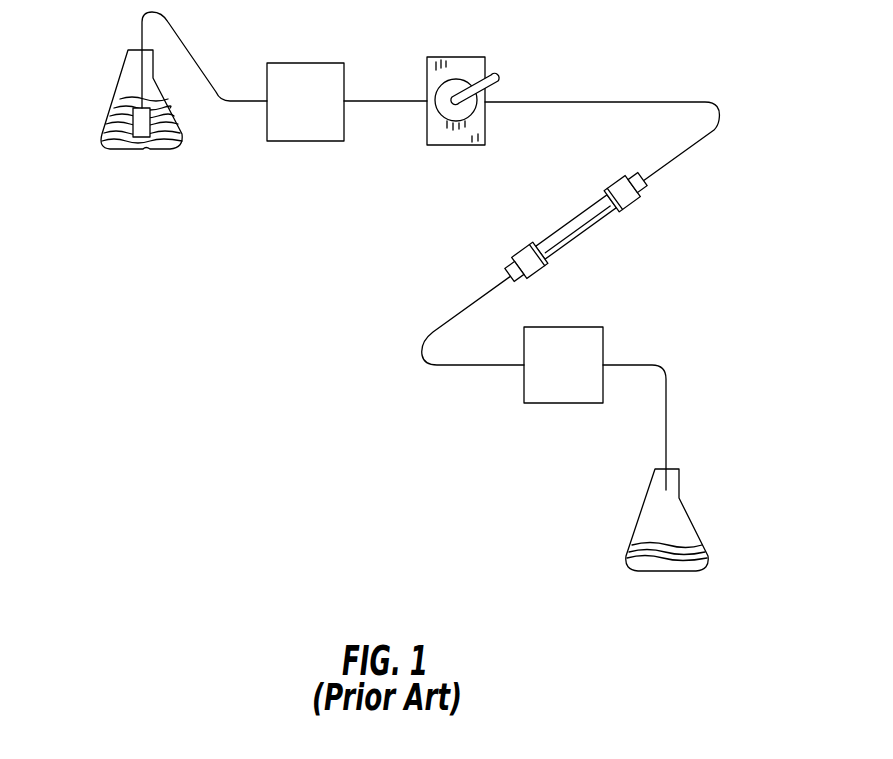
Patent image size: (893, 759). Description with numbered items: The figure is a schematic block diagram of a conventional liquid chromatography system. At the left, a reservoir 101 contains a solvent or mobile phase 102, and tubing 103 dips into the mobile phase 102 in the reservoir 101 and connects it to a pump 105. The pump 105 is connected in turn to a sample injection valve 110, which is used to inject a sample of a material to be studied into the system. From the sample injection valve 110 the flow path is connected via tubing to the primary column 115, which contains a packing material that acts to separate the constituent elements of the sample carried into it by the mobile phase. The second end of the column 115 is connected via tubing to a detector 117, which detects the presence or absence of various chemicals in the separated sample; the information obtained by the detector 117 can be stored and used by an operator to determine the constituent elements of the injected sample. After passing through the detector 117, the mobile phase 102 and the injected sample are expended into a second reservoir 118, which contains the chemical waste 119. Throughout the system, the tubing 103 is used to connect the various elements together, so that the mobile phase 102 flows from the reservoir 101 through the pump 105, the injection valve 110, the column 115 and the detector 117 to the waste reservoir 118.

The reservoir 101 is at (128, 62).
The mobile phase 102 is at (117, 128).
The tubing 103 is at (183, 35).
The pump 105 is at (305, 102).
The sample injection valve 110 is at (457, 56).
The primary column 115 is at (580, 235).
The detector 117 is at (585, 378).
The second reservoir 118 is at (680, 483).
The chemical waste 119 is at (702, 550).